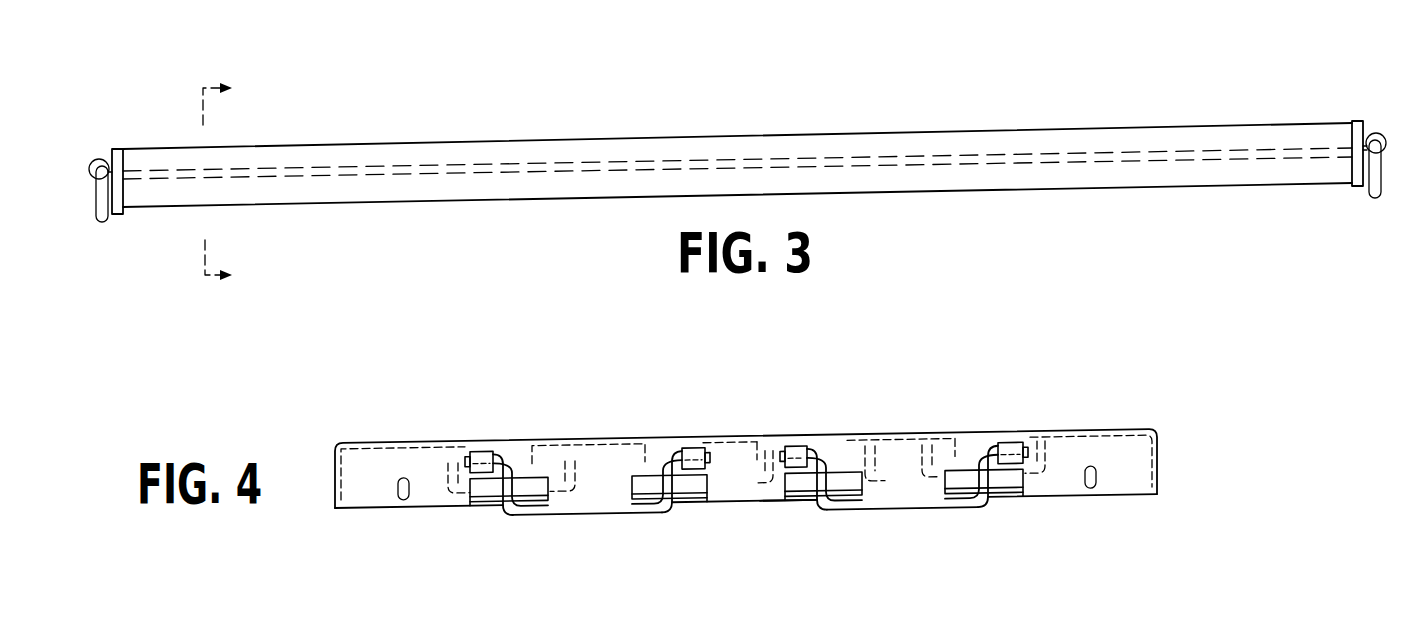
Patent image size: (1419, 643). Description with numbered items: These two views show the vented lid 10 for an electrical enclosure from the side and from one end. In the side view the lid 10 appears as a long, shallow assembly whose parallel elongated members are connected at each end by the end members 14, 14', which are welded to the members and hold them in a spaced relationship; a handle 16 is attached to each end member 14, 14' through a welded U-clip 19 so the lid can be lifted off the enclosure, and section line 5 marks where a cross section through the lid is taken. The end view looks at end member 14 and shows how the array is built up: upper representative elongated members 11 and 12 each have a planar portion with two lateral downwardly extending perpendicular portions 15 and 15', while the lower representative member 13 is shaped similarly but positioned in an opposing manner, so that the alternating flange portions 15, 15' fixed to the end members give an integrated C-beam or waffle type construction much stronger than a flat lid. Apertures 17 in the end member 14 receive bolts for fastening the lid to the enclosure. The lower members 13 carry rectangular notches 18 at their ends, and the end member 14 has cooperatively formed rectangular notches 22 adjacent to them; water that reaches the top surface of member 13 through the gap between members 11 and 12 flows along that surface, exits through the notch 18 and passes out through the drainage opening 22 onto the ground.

In FIG. 3, the lid 10 is at (498, 132).
In FIG. 4, the lid 10 is at (1173, 455).
In FIG. 4, the elongated member 11 is at (900, 422).
In FIG. 4, the elongated member 12 is at (732, 428).
In FIG. 4, the elongated member 13 is at (790, 503).
In FIG. 3, the end member 14 is at (133, 153).
In FIG. 4, the end member 14 is at (419, 514).
In FIG. 3, the end member 14' is at (1348, 123).
In FIG. 4, the lateral portion 15 is at (867, 426).
In FIG. 4, the lateral portion 15' is at (769, 428).
In FIG. 3, the handle 16 is at (103, 224).
In FIG. 4, the handle 16 is at (595, 513).
In FIG. 4, the aperture 17 is at (404, 500).
In FIG. 4, the rectangular notch 18 is at (492, 499).
In FIG. 3, the U-clip 19 is at (96, 160).
In FIG. 4, the U-clip 19 is at (484, 458).
In FIG. 4, the rectangular notch 22 is at (540, 489).
In FIG. 3, the section line 5- 5 is at (227, 181).